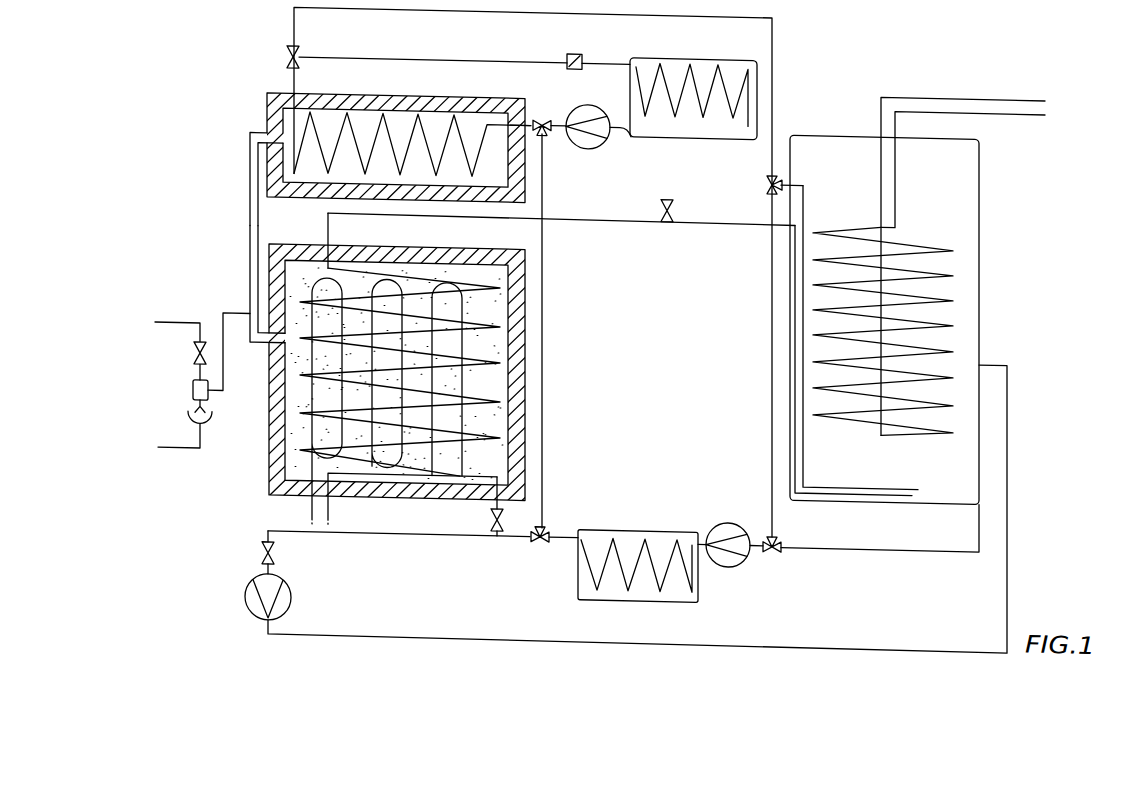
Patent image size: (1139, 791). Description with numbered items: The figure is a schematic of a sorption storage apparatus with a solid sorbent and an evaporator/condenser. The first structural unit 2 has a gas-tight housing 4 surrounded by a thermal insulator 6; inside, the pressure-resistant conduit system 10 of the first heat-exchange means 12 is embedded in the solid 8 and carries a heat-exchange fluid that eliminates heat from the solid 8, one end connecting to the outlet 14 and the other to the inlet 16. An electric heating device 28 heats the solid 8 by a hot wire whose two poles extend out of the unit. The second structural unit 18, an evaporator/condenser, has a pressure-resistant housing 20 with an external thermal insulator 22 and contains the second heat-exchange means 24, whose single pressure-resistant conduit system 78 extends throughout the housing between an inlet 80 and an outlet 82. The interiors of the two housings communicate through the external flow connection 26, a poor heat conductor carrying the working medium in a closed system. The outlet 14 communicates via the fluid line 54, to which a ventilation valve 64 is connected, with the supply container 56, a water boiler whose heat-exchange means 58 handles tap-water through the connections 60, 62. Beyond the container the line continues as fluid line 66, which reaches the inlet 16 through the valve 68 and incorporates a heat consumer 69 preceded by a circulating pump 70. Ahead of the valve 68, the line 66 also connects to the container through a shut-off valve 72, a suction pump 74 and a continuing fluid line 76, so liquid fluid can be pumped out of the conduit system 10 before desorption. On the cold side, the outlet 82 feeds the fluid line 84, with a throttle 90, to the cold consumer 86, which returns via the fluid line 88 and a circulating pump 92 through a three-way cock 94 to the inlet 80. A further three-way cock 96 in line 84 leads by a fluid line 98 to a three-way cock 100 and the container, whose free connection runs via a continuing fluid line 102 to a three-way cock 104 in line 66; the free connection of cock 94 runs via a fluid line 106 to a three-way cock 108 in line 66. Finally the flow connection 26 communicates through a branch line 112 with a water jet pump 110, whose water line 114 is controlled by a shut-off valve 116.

The first structural unit 2 is at (534, 250).
The gas-tight housing 4 is at (510, 284).
The thermal insulator 6 is at (522, 313).
The solid 8 is at (496, 334).
The pressure-resistant conduit system 10 is at (492, 355).
The first heat-exchange means 12 is at (487, 401).
The outlet 14 is at (330, 236).
The inlet 16 is at (503, 482).
The second structural unit 18 is at (517, 74).
The pressure-resistant housing 20 is at (526, 136).
The external thermal insulator 22 is at (433, 90).
The second heat-exchange means 24 is at (363, 111).
The external flow connection 26 is at (248, 217).
The electric heating device 28 is at (470, 442).
The fluid line 54 is at (612, 207).
The supply container 56 is at (991, 163).
The heat-exchange means 58 is at (963, 251).
The connection 60 is at (990, 75).
The connection 62 is at (990, 93).
The ventilation valve 64 is at (678, 193).
The fluid line 66 is at (877, 534).
The valve 68 is at (491, 510).
The heat consumer 69 is at (619, 506).
The circulating pump 70 is at (735, 551).
The shut-off valve 72 is at (275, 547).
The suction pump 74 is at (292, 597).
The continuing fluid line 76 is at (422, 624).
The pressure-resistant conduit system 78 is at (315, 120).
The inlet 80 is at (542, 104).
The outlet 82 is at (272, 84).
The fluid line 84 is at (288, 74).
The cold consumer 86 is at (690, 44).
The fluid line 88 is at (622, 118).
The throttle 90 is at (582, 40).
The circulating pump 92 is at (598, 134).
The three-way cock 94 is at (549, 105).
The three-way cock 96 is at (288, 48).
The fluid line 98 is at (430, 2).
The three-way cock 100 is at (762, 170).
The continuing fluid line 102 is at (765, 362).
The three-way cock 104 is at (783, 526).
The fluid line 106 is at (543, 186).
The three-way cock 108 is at (423, 552).
The water jet pump 110 is at (193, 384).
The branch line 112 is at (224, 354).
The water line 114 is at (174, 313).
The shut-off valve 116 is at (193, 346).